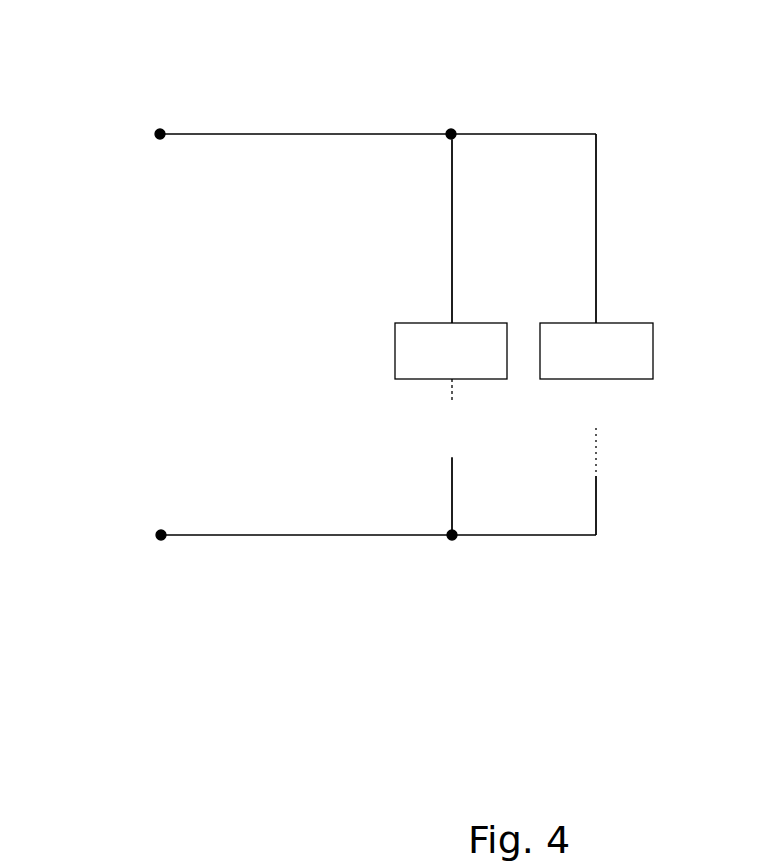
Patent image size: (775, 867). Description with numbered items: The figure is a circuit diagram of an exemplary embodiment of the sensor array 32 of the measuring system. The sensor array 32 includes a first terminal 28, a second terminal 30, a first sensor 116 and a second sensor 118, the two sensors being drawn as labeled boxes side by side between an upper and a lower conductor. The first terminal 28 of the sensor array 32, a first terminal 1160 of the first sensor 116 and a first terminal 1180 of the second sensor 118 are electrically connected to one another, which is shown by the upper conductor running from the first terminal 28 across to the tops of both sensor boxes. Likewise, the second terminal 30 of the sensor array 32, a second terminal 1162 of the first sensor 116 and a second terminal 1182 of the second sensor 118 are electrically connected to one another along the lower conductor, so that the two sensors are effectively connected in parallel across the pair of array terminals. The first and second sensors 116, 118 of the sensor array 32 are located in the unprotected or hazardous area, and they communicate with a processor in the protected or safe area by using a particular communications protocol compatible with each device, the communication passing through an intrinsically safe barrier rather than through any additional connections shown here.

The first terminal 28 is at (160, 134).
The second terminal 30 is at (161, 535).
The sensor array 32 is at (537, 775).
The first sensor 116 is at (417, 379).
The second sensor 118 is at (561, 379).
The first terminal of the first sensor 1160 is at (448, 155).
The second terminal of the first sensor 1162 is at (452, 458).
The first terminal of the second sensor 1180 is at (596, 155).
The second terminal of the second sensor 1182 is at (597, 478).